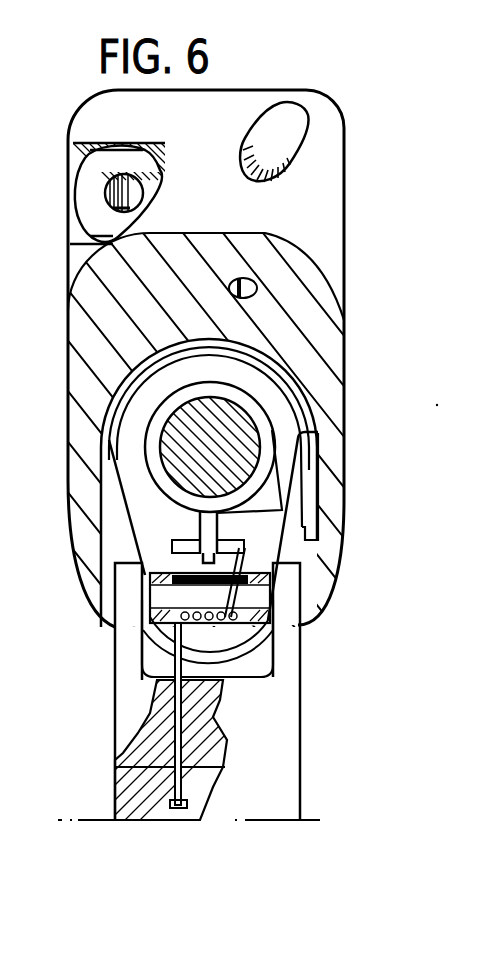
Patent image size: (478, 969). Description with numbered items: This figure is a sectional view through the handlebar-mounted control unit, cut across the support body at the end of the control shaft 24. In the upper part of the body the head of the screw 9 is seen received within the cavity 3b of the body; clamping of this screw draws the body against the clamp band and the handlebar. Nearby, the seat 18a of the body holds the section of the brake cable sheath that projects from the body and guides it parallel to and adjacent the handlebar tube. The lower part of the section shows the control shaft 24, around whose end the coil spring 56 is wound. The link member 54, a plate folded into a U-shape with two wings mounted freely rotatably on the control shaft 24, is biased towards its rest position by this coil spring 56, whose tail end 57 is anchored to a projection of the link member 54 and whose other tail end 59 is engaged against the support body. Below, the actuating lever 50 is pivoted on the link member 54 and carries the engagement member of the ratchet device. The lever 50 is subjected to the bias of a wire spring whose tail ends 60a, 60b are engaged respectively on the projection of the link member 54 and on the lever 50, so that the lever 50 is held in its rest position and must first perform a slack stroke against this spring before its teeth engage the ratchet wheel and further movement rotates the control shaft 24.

The cavity 3b is at (90, 153).
The screw 9 is at (137, 160).
The seat 18a is at (288, 113).
The control shaft 24 is at (245, 438).
The coil spring 56 is at (250, 384).
The link member 54 is at (148, 508).
The tail end 59 is at (307, 488).
The tail end 57 is at (217, 513).
The tail end 60a is at (243, 560).
The tail end 60b is at (220, 722).
The actuating lever 50 is at (280, 755).